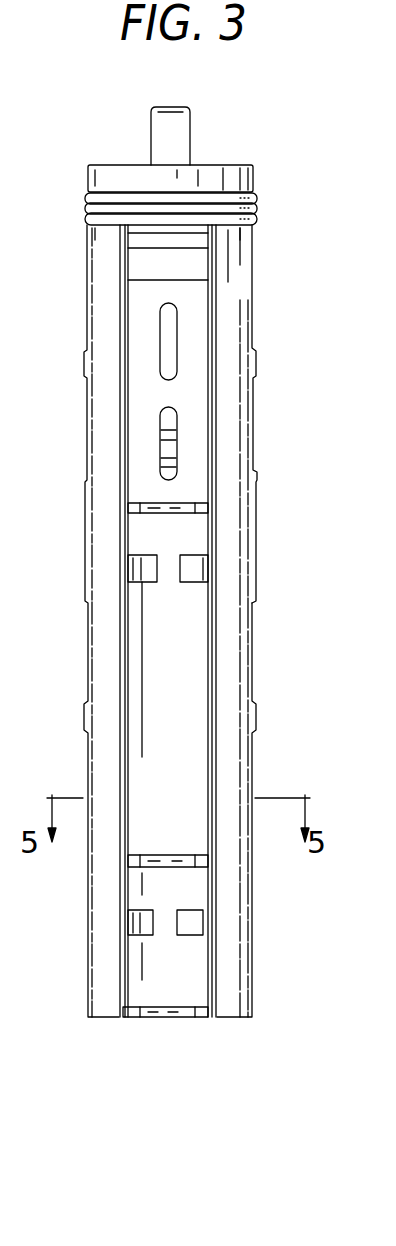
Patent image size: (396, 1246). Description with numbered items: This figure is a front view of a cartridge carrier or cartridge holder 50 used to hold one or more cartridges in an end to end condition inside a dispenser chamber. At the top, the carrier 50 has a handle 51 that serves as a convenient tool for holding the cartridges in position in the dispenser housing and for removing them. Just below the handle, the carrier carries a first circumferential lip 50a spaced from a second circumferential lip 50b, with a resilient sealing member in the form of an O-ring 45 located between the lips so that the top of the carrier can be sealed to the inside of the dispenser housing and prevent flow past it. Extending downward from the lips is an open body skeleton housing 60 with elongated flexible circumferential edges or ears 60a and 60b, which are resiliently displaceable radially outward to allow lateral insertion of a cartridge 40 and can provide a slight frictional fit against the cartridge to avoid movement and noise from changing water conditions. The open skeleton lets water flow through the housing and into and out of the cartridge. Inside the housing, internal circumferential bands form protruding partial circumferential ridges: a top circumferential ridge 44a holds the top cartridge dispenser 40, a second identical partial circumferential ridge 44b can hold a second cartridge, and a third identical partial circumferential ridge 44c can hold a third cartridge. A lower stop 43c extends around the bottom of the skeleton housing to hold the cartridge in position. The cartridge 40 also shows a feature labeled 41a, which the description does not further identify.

The cartridge carrier 50 is at (250, 118).
The handle 51 is at (165, 133).
The first circumferential lip 50a is at (257, 198).
The O-ring 45 is at (257, 208).
The second circumferential lip 50b is at (257, 220).
The top circumferential ridge 44a is at (193, 242).
The open body skeleton housing 60 is at (257, 360).
The cartridge 40 is at (192, 407).
The slot 41a is at (177, 445).
The lower stop 43c is at (128, 508).
The second partial circumferential ridge 44b is at (188, 581).
The third partial circumferential ridge 44c is at (187, 923).
The flexible ear 60a is at (83, 720).
The flexible ear 60b is at (255, 712).